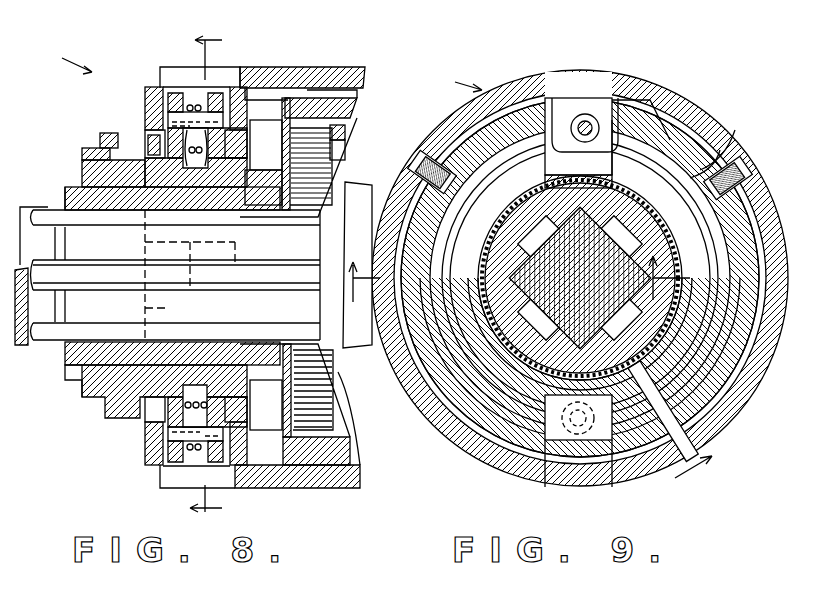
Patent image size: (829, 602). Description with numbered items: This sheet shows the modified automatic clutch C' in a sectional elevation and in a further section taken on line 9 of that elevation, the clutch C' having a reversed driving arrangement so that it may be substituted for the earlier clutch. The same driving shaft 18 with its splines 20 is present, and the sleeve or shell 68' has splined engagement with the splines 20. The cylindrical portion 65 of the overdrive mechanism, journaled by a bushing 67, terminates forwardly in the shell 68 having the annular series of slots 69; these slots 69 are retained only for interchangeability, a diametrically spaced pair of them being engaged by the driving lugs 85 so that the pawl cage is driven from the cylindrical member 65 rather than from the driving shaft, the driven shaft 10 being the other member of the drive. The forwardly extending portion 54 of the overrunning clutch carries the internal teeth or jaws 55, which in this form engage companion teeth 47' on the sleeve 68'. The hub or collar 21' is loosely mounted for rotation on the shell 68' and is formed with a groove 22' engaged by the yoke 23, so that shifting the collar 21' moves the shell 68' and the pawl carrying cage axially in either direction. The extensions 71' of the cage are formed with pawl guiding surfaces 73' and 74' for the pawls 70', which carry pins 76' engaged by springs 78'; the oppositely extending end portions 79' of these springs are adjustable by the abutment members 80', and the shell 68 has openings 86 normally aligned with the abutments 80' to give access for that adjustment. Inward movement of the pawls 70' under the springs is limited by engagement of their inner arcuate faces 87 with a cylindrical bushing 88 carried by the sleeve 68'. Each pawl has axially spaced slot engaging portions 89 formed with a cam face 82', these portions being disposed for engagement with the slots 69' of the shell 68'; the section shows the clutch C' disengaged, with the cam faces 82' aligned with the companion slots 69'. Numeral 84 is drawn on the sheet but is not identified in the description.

In FIG. 8, the driving shaft 18 is at (45, 207).
In FIG. 9, the driving shaft 18 is at (520, 255).
In FIG. 8, the splines 20 is at (262, 260).
In FIG. 8, the collar 21' is at (78, 136).
In FIG. 8, the groove 22' is at (156, 404).
In FIG. 8, the yoke 23 is at (95, 150).
In FIG. 8, the teeth 47' is at (270, 150).
In FIG. 8, the forward extension 54 is at (290, 488).
In FIG. 8, the teeth or jaws 55 is at (340, 160).
In FIG. 8, the cylindrical portion 65 is at (340, 67).
In FIG. 8, the bushing 67 is at (357, 95).
In FIG. 8, the shell 68 is at (245, 94).
In FIG. 9, the shell 68 is at (580, 278).
In FIG. 8, the sleeve or shell 68' is at (172, 219).
In FIG. 9, the sleeve or shell 68' is at (531, 350).
In FIG. 8, the slots 69 is at (185, 53).
In FIG. 9, the slots 69 is at (580, 289).
In FIG. 8, the slots 69' is at (237, 79).
In FIG. 9, the slots 69' is at (580, 431).
In FIG. 9, the pawls 70' is at (594, 104).
In FIG. 9, the extensions 71' is at (665, 118).
In FIG. 9, the pawl guiding surface 73' is at (580, 254).
In FIG. 9, the pawl guiding surface 74' is at (643, 92).
In FIG. 8, the pins 76' is at (171, 435).
In FIG. 9, the pins 76' is at (569, 90).
In FIG. 8, the springs 78' is at (175, 464).
In FIG. 9, the springs 78' is at (585, 104).
In FIG. 9, the end portions 79' is at (685, 181).
In FIG. 9, the abutment members 80' is at (722, 125).
In FIG. 8, the cam face 82' is at (134, 107).
In FIG. 9, the cam face 82' is at (580, 278).
In FIG. 8, the step 84 is at (68, 378).
In FIG. 8, the driving lugs 85 is at (372, 348).
In FIG. 9, the openings 86 is at (760, 158).
In FIG. 9, the inner arcuate faces 87 is at (612, 182).
In FIG. 8, the cylindrical bushing 88 is at (230, 347).
In FIG. 9, the cylindrical bushing 88 is at (660, 232).
In FIG. 8, the slot engaging portions 89 is at (140, 160).
In FIG. 9, the slot engaging portions 89 is at (585, 487).
In FIG. 8, the section line 9- 9 is at (196, 274).
In FIG. 9, the driven shaft 10 is at (528, 265).
In FIG. 8, the automatic clutch C' is at (68, 62).
In FIG. 9, the automatic clutch C' is at (459, 81).